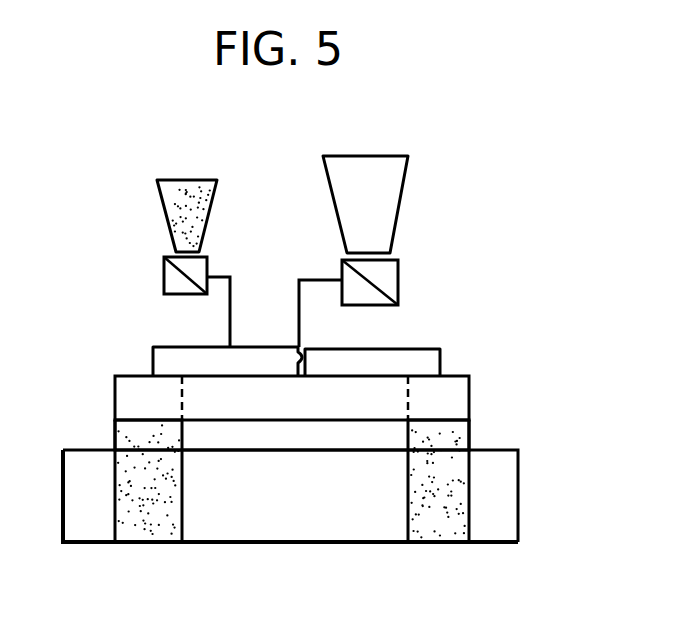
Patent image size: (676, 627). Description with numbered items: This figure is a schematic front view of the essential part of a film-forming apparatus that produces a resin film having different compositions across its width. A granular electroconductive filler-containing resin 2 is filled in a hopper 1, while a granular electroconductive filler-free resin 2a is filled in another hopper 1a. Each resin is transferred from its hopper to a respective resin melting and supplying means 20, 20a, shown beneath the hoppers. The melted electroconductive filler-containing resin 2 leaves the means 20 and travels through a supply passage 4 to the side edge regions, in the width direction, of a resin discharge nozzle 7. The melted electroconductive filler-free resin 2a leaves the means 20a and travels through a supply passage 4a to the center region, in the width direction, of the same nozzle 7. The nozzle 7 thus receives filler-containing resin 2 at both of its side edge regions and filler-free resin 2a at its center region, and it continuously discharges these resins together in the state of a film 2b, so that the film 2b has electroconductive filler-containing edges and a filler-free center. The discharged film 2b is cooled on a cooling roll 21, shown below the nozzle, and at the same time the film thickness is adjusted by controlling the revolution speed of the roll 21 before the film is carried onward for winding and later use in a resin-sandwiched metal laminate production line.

The hopper 1 is at (166, 214).
The another hopper 1a is at (403, 185).
The resin melting and supplying means 20 is at (163, 275).
The resin melting and supplying means 20a is at (398, 268).
The supply passage 4 is at (229, 324).
The supply passage 4a is at (299, 318).
The resin discharge nozzle 7 is at (375, 403).
The electroconductive filler-containing resin 2 is at (128, 440).
The electroconductive filler-free resin 2a is at (265, 433).
The film 2b is at (357, 502).
The cooling roll 21 is at (519, 496).